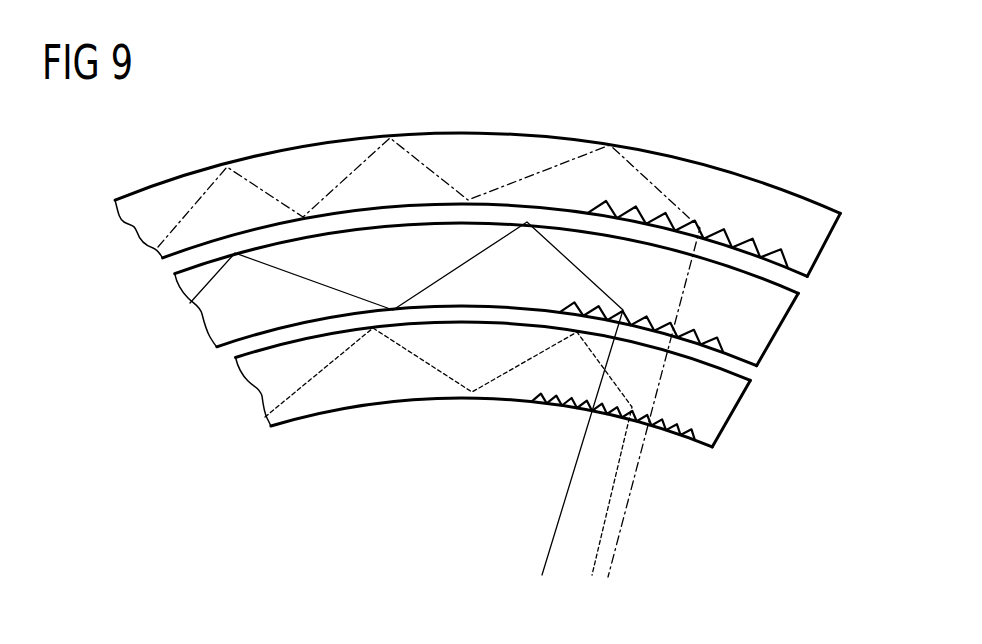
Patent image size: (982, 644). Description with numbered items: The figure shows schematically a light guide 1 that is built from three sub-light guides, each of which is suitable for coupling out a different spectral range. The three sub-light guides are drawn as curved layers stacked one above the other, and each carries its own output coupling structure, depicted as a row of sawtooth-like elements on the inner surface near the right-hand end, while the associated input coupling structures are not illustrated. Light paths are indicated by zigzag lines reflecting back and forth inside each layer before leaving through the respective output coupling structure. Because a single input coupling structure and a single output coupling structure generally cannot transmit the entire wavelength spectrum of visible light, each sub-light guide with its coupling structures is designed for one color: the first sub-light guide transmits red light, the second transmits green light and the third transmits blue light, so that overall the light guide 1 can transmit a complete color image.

The light guide 1 is at (738, 153).